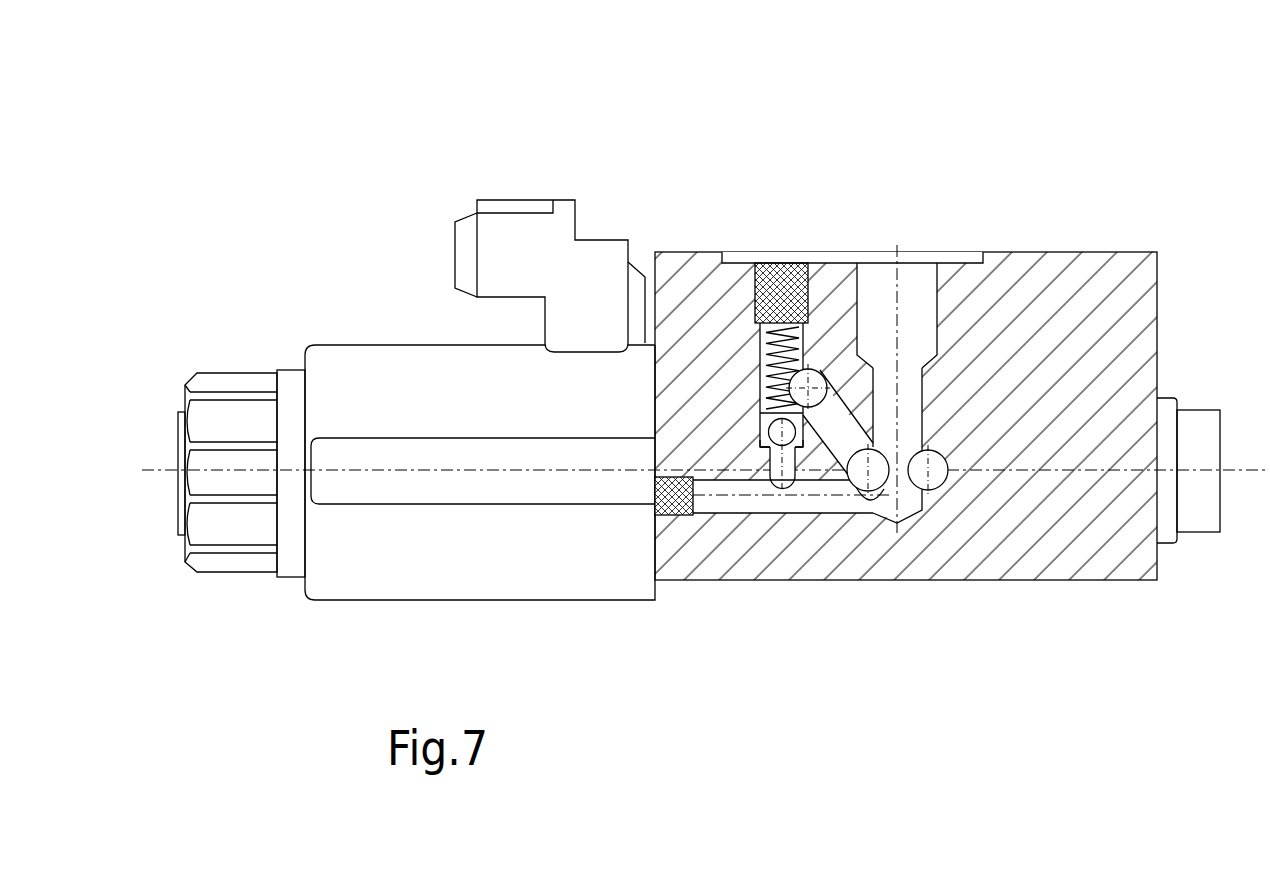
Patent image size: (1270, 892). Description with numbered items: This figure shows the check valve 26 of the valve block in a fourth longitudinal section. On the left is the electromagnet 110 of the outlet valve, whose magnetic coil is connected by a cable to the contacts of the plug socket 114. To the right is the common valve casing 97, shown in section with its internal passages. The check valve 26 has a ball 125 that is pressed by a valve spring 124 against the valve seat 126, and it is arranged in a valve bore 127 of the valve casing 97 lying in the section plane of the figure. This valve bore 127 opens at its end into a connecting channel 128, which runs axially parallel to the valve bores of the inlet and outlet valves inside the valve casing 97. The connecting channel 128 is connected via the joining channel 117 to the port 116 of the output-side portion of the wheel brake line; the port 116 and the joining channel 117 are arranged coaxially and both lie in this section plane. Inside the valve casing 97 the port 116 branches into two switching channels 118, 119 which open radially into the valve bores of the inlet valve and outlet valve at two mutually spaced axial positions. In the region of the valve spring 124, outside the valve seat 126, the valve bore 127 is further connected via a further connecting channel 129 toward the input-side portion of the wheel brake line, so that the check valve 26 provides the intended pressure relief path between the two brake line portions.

The electromagnet 110 is at (368, 221).
The plug socket 114 is at (518, 247).
The valve casing 97 is at (1063, 297).
The check valve 26 is at (781, 250).
The valve spring 124 is at (752, 405).
The valve bore 127 is at (766, 417).
The further connecting channel 129 is at (812, 369).
The ball 125 is at (784, 425).
The valve seat 126 is at (760, 460).
The connecting channel 128 is at (823, 503).
The port 116 is at (917, 307).
The joining channel 117 is at (911, 410).
The switching channel 118 is at (858, 478).
The switching channel 119 is at (937, 476).